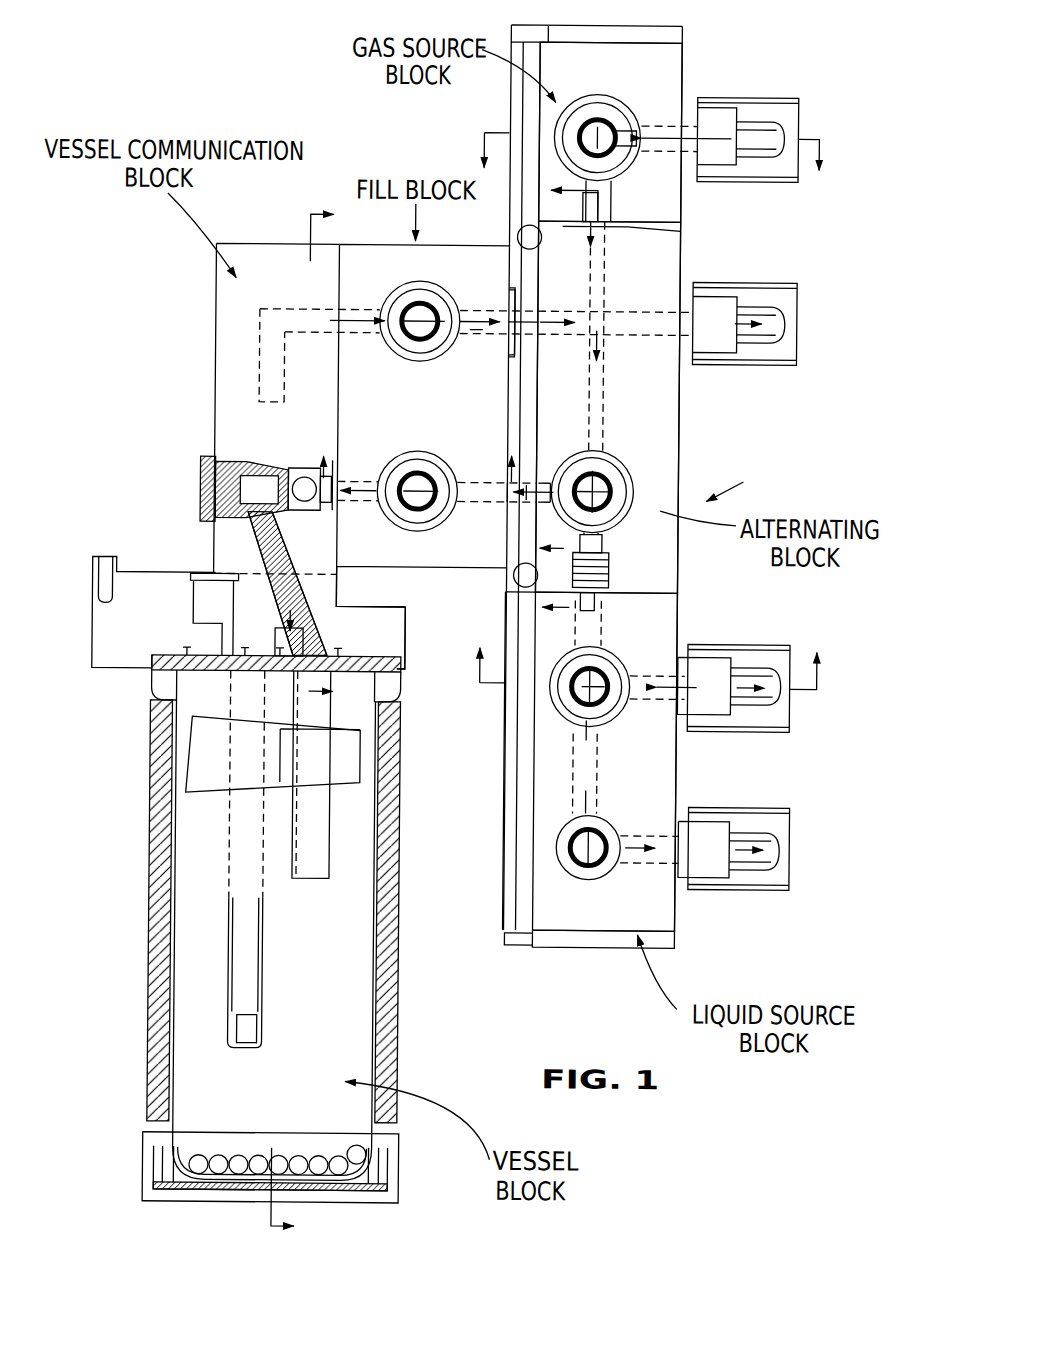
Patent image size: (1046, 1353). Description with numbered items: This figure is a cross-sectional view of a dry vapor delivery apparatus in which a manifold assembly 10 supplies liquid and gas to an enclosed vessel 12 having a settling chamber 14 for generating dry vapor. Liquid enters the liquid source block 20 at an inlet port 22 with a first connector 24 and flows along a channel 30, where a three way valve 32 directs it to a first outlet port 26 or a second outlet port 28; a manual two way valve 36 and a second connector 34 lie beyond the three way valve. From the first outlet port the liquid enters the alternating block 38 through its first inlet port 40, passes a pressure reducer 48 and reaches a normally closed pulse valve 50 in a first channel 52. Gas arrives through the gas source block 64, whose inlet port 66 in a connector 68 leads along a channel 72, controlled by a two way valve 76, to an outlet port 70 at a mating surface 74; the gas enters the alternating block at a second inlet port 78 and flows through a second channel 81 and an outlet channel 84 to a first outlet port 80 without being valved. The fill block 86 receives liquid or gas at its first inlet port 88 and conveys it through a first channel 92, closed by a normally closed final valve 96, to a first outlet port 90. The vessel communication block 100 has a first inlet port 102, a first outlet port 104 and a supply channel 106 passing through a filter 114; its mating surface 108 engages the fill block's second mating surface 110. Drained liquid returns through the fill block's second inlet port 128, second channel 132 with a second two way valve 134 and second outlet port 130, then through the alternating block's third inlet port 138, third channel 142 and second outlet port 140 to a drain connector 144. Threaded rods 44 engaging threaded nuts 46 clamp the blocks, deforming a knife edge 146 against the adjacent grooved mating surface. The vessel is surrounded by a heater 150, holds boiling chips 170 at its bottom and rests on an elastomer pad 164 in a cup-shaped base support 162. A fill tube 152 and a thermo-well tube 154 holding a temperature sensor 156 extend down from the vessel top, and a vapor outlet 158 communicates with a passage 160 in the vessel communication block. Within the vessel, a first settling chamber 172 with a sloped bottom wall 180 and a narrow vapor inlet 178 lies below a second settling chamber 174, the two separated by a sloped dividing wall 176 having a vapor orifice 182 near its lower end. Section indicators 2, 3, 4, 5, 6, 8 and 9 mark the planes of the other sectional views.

The section line 2- 2 is at (647, 662).
The section line 3- 3 is at (565, 418).
The section line 4- 4 is at (544, 548).
The section line 5- 5 is at (649, 152).
The section line 6- 6 is at (415, 453).
The section line 8- 8 is at (331, 454).
The section line 9- 9 is at (291, 920).
The manifold assembly 10 is at (730, 476).
The vessel 12 is at (380, 1055).
The settling chamber 14 is at (273, 755).
The liquid source block 20 is at (672, 633).
The inlet port 22 is at (786, 690).
The first connector 24 is at (724, 730).
The first outlet port 26 is at (600, 600).
The second outlet port 28 is at (786, 856).
The channel 30 is at (594, 746).
The three way valve 32 is at (568, 700).
The second connector 34 is at (722, 890).
The two way valve 36 is at (590, 876).
The alternating block 38 is at (674, 462).
The first inlet port 40 is at (608, 592).
The threaded rods 44 is at (508, 900).
The threaded nut 46 is at (522, 230).
The pressure reducer 48 is at (580, 590).
The pulse valve 50 is at (618, 478).
The first channel 52 is at (606, 545).
The gas source block 64 is at (650, 40).
The inlet port 66 is at (783, 135).
The connector 68 is at (748, 90).
The outlet port 70 is at (598, 218).
The channel 72 is at (632, 135).
The mating surface 74 is at (680, 222).
The two way valve 76 is at (598, 120).
The second inlet port 78 is at (593, 242).
The first outlet port 80 is at (522, 500).
The second channel 81 is at (606, 518).
The outlet channel 84 is at (575, 476).
The fill block 86 is at (424, 562).
The first inlet port 88 is at (500, 488).
The first outlet port 90 is at (338, 497).
The first channel 92 is at (380, 490).
The final valve 96 is at (444, 508).
The vessel communication block 100 is at (216, 328).
The first inlet port 102 is at (318, 513).
The first outlet port 104 is at (310, 657).
The supply channel 106 is at (272, 530).
The mating surface 108 is at (338, 380).
The second mating surface 110 is at (340, 410).
The filter 114 is at (257, 462).
The second inlet port 128 is at (346, 302).
The second outlet port 130 is at (496, 318).
The second channel 132 is at (478, 338).
The second two way valve 134 is at (394, 340).
The third inlet port 138 is at (517, 320).
The second outlet port 140 is at (790, 322).
The third channel 142 is at (608, 322).
The connector 144 is at (788, 282).
The knife edge 146 is at (640, 226).
The heater 150 is at (388, 984).
The fill tube 152 is at (330, 858).
The thermo-well tube 154 is at (262, 977).
The temperature sensor 156 is at (263, 1036).
The vapor outlet 158 is at (214, 650).
The passage 160 is at (208, 576).
The base support 162 is at (396, 1172).
The elastomer pad 164 is at (243, 1192).
The boiling chips 170 is at (320, 1166).
The first settling chamber 172 is at (346, 780).
The second settling chamber 174 is at (207, 683).
The sloped dividing wall 176 is at (380, 768).
The vapor inlet 178 is at (214, 795).
The bottom wall 180 is at (286, 794).
The vapor orifice 182 is at (393, 769).